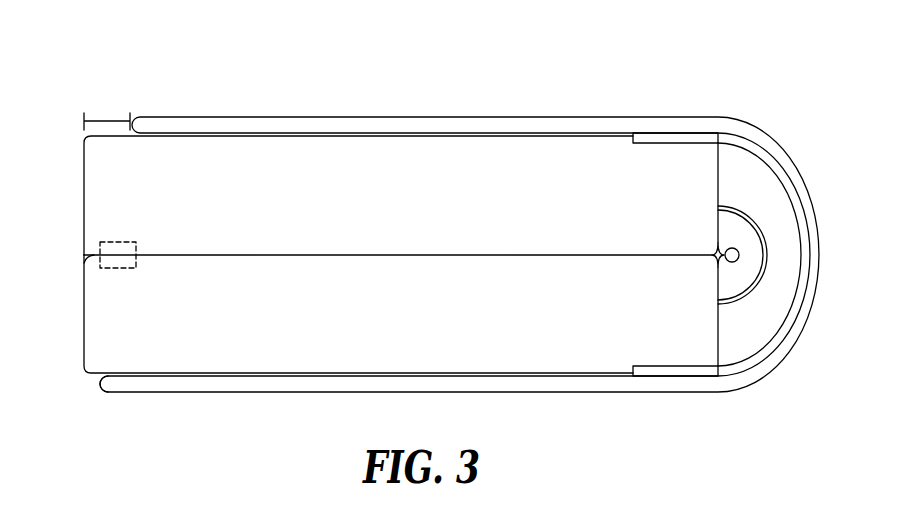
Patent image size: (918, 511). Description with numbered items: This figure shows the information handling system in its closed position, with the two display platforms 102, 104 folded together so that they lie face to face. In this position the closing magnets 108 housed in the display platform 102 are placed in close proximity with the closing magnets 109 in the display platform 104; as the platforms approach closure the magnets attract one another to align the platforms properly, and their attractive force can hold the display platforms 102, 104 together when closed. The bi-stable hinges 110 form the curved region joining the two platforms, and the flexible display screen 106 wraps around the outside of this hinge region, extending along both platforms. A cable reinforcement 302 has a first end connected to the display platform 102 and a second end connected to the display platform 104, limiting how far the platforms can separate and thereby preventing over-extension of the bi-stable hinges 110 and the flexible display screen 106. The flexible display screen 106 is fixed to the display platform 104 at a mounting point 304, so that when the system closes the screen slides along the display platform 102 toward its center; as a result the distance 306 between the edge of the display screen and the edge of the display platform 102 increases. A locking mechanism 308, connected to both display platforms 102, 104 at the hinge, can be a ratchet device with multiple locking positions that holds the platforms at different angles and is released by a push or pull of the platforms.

The display platform 102 is at (140, 165).
The display platform 104 is at (140, 363).
The flexible display screen 106 is at (334, 105).
The closing magnets 108 is at (87, 253).
The closing magnets 109 is at (100, 268).
The bi-stable hinges 110 is at (727, 142).
The cable reinforcement 302 is at (752, 218).
The mounting point 304 is at (101, 379).
The distance 306 is at (110, 121).
The locking mechanism 308 is at (739, 259).